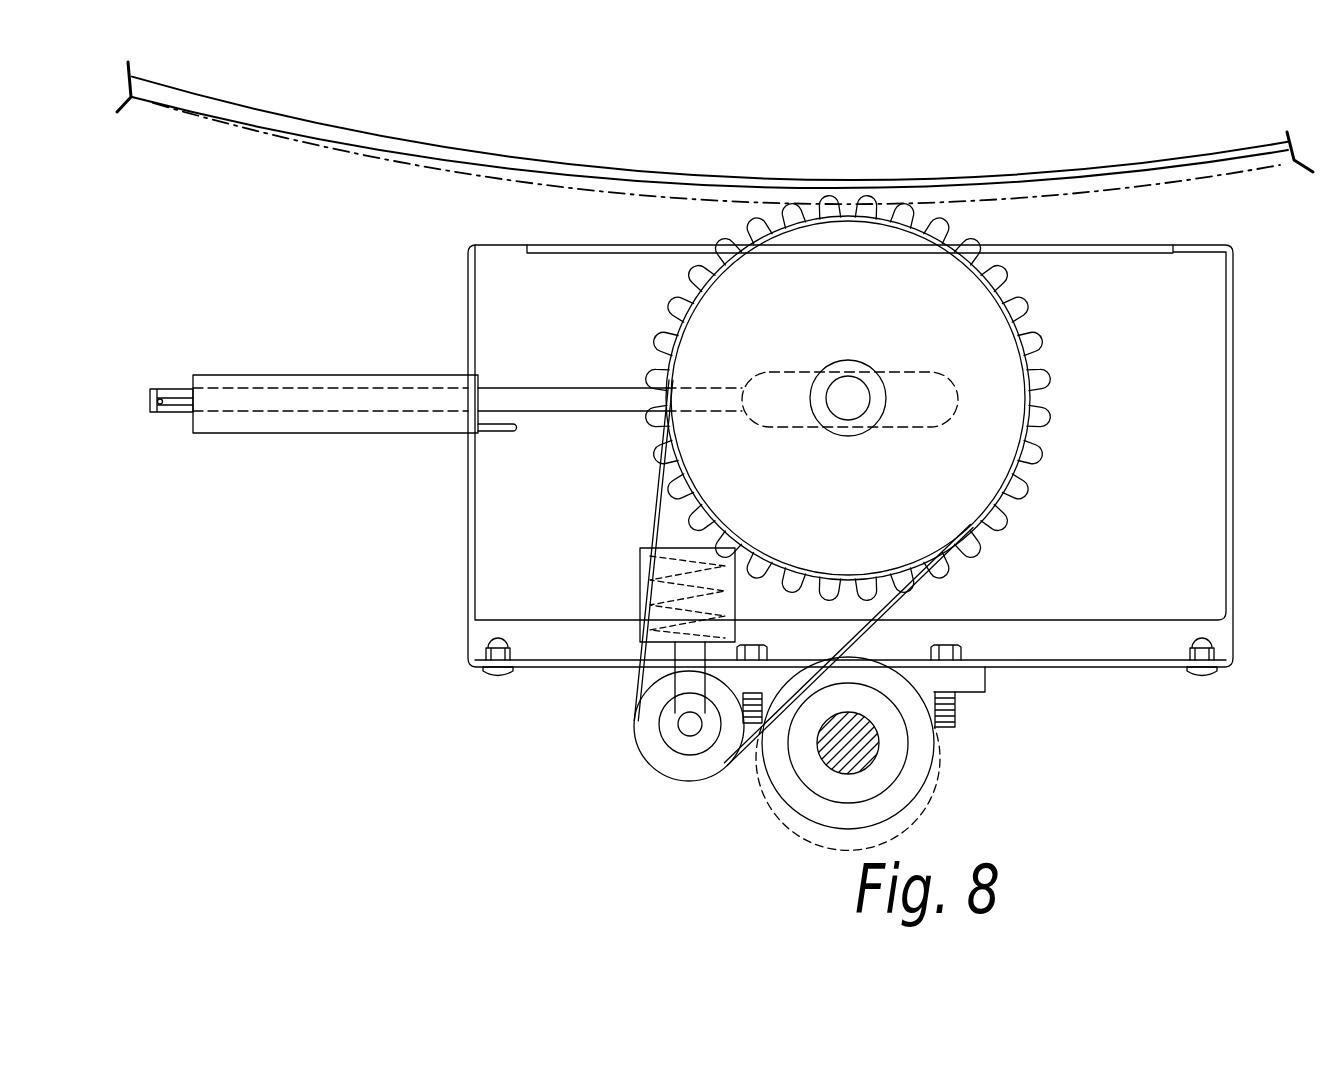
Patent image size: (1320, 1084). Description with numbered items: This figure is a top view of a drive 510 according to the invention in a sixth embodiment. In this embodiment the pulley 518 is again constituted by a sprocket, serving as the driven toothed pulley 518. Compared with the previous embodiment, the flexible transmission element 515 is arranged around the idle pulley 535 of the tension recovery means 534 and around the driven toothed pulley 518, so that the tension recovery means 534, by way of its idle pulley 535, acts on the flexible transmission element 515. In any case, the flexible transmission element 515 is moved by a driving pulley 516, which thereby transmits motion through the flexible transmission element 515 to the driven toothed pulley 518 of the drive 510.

The drive 510 is at (419, 633).
The pulley 518 is at (713, 327).
The flexible transmission element 515 is at (633, 680).
The tension recovery means 534 is at (736, 608).
The idle pulley 535 is at (683, 763).
The driving pulley 516 is at (903, 788).